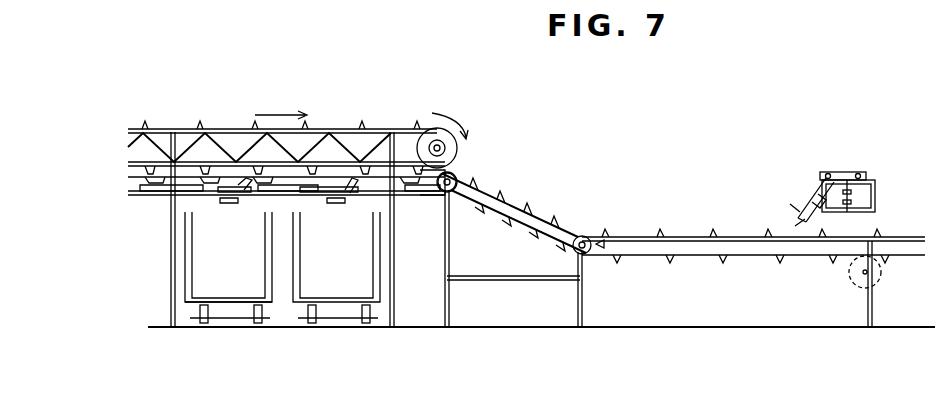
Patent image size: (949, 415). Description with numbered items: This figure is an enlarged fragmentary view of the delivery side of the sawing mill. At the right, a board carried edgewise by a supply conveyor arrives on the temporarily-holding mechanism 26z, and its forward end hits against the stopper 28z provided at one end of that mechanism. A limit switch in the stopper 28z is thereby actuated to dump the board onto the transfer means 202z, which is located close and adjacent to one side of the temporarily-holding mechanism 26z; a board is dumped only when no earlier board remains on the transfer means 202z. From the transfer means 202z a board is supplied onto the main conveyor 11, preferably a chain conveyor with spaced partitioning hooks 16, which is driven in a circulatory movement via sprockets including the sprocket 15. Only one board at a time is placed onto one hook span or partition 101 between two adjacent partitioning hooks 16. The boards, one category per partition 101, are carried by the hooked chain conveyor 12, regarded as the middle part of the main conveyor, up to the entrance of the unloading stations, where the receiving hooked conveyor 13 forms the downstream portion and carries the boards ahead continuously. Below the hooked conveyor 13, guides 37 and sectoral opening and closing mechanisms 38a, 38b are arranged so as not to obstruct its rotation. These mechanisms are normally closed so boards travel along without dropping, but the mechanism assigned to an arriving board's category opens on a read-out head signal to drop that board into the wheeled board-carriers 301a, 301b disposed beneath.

The hooked conveyor 13 is at (401, 127).
The guide 37 is at (162, 190).
The sectoral opening and closing mechanism 38b is at (231, 192).
The sectoral opening and closing mechanism 38a is at (328, 193).
The wheeled board-carrier 301b is at (228, 292).
The wheeled board-carrier 301a is at (340, 292).
The chain conveyor 12 is at (499, 190).
The sprocket 15 is at (586, 252).
The partitioning hook 16 is at (605, 232).
The partition 101 is at (780, 236).
The main conveyor 11 is at (752, 265).
The stopper 28z is at (872, 172).
The temporarily-holding mechanism 26z is at (834, 172).
The transfer means 202z is at (810, 195).